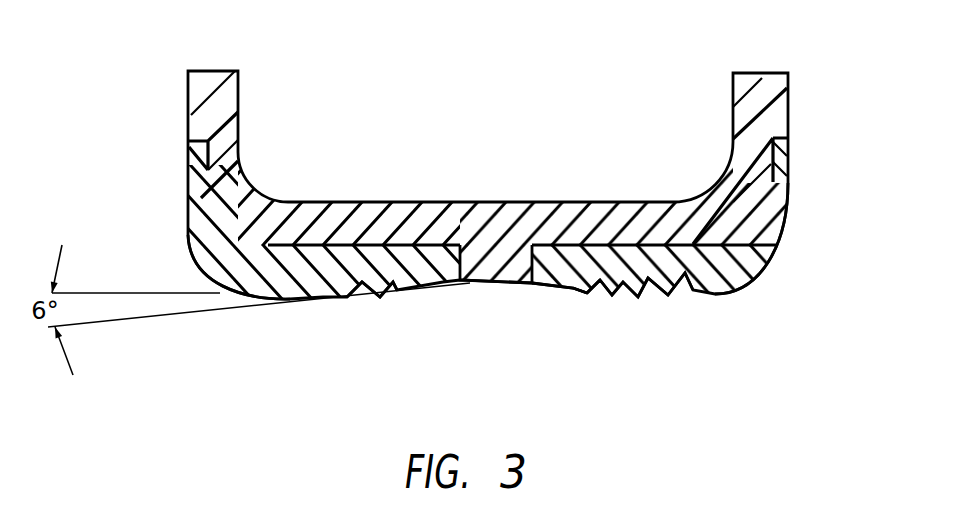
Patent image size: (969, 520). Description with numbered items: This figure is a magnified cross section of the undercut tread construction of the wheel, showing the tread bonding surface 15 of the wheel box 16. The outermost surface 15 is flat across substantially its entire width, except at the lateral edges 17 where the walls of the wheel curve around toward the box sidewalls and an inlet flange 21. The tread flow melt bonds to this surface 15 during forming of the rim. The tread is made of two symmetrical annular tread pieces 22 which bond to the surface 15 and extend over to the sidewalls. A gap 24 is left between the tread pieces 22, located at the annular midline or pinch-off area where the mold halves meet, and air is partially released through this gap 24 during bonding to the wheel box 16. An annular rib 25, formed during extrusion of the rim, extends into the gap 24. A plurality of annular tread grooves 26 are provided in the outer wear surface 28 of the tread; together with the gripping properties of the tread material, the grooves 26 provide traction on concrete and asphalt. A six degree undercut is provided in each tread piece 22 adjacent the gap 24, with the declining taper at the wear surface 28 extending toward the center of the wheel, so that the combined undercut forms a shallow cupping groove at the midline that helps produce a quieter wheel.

The outermost surface 15 is at (600, 247).
The wheel box 16 is at (788, 92).
The lateral edges 17 is at (770, 263).
The inlet flange 21 is at (775, 138).
The tread pieces 22 is at (193, 247).
The gap 24 is at (457, 268).
The annular rib 25 is at (510, 282).
The tread grooves 26 is at (328, 290).
The wear surface 28 is at (580, 290).